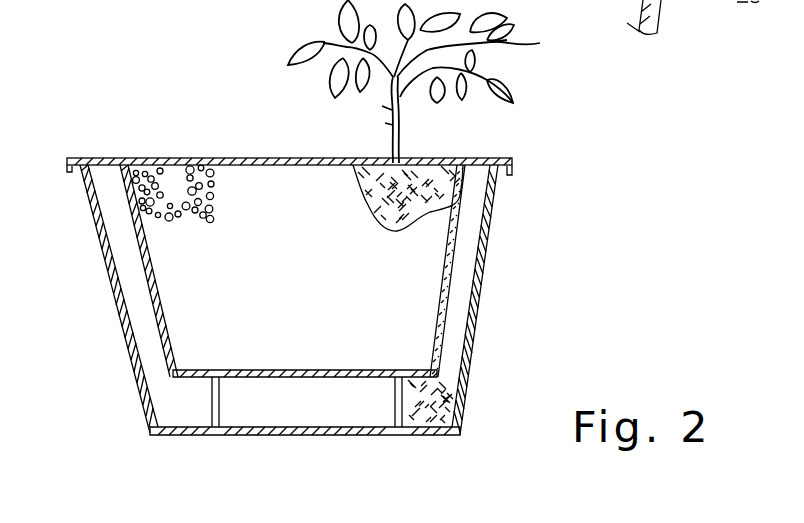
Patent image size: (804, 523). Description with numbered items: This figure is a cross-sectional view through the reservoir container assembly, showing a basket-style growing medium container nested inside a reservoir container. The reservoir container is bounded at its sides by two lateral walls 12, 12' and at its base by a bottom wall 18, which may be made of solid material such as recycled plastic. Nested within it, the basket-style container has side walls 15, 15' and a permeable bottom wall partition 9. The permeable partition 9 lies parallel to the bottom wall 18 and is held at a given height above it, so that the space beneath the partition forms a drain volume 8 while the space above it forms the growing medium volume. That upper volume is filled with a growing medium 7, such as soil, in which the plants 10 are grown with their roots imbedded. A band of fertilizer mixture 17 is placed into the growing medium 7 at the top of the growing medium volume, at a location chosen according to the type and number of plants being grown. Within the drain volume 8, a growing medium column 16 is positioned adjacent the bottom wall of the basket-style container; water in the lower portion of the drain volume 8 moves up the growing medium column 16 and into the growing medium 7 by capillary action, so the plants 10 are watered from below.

The growing medium 7 is at (450, 160).
The drain volume 8 is at (186, 395).
The permeable bottom wall partition 9 is at (258, 370).
The plants 10 is at (515, 47).
The lateral wall 12 is at (105, 299).
The lateral wall 12' is at (505, 300).
The side wall 15 is at (125, 271).
The side wall 15' is at (502, 271).
The growing medium column 16 is at (428, 408).
The band of fertilizer mixture 17 is at (183, 177).
The bottom wall 18 is at (180, 436).